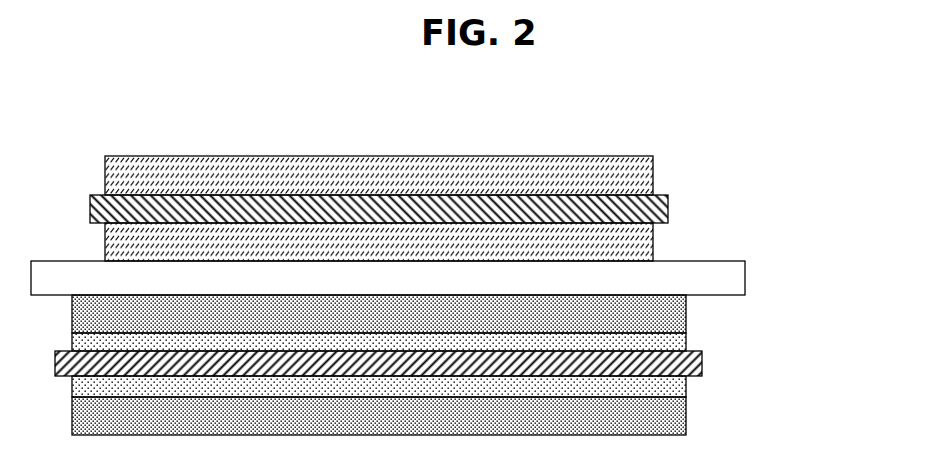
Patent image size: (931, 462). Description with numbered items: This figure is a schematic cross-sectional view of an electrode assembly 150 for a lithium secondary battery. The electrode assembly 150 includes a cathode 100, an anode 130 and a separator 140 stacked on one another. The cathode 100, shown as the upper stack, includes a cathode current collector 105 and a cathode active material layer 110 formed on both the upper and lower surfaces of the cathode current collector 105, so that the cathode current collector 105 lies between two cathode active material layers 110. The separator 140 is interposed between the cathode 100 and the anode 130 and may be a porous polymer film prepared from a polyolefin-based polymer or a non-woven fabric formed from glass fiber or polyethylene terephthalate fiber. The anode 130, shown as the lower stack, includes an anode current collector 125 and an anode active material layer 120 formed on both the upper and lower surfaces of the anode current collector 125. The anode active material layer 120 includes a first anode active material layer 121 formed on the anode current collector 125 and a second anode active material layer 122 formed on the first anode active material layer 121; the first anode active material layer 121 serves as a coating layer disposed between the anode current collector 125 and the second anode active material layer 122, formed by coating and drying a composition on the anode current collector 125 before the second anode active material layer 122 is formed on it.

The electrode assembly 150 is at (399, 88).
The cathode 100 is at (460, 208).
The cathode active material layer 110 is at (653, 178).
The cathode current collector 105 is at (668, 202).
The separator 140 is at (737, 280).
The anode 130 is at (474, 365).
The anode active material layer 120 is at (457, 365).
The first anode active material layer 121 is at (686, 343).
The second anode active material layer 122 is at (668, 317).
The anode current collector 125 is at (702, 363).